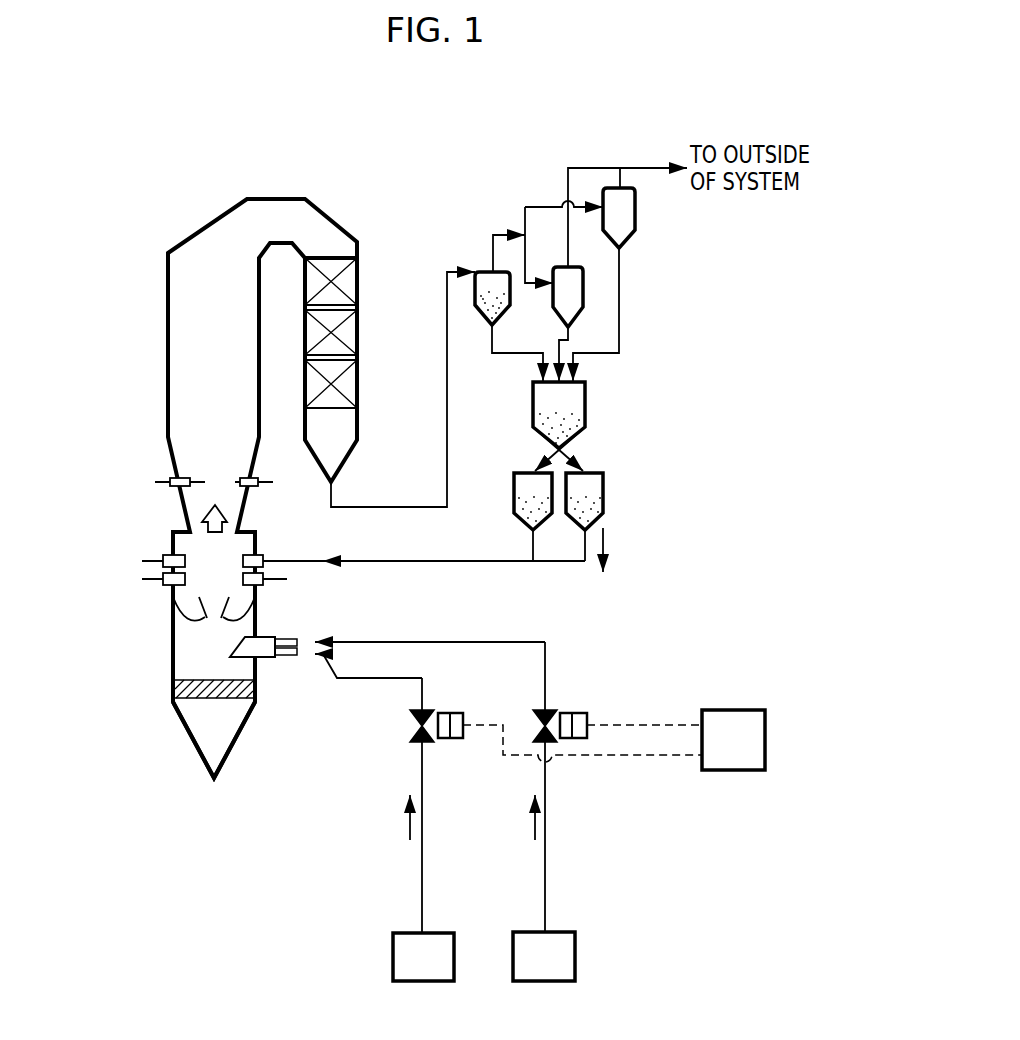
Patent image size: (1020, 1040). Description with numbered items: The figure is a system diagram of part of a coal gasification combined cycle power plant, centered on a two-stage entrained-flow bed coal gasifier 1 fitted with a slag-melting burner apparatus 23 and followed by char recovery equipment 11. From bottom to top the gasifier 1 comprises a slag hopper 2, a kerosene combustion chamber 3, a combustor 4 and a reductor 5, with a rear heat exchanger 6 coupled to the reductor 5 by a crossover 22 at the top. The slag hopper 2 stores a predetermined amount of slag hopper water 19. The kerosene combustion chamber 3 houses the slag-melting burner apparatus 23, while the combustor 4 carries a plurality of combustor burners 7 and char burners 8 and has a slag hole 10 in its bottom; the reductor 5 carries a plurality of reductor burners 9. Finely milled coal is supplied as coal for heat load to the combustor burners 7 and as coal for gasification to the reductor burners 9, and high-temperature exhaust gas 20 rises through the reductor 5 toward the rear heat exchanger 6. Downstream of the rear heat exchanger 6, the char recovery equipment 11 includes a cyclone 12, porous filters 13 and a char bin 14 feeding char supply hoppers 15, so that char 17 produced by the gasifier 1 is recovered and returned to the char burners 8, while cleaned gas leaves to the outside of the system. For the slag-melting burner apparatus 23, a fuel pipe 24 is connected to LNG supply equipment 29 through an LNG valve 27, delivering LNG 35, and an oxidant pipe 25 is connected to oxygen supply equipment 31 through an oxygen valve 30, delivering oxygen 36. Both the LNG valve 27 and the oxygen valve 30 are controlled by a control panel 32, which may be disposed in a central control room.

The two-stage entrained-flow bed coal gasifier 1 is at (168, 153).
The slag hopper 2 is at (128, 684).
The kerosene combustion chamber 3 is at (126, 598).
The combustor 4 is at (126, 533).
The reductor 5 is at (126, 200).
The rear heat exchanger 6 is at (372, 243).
The combustor burner 7 is at (287, 600).
The char burner 8 is at (262, 555).
The reductor burner 9 is at (245, 477).
The slag hole 10 is at (213, 605).
The char recovery equipment 11 is at (722, 193).
The cyclone 12 is at (483, 318).
The porous filter 13 is at (637, 212).
The char bin 14 is at (588, 410).
The char supply hopper 15 is at (606, 484).
The char 17 is at (606, 541).
The slag hopper water 19 is at (220, 750).
The high-temperature exhaust gas 20 is at (215, 503).
The crossover 22 is at (275, 197).
The slag-melting burner apparatus 23 is at (263, 658).
The fuel pipe 24 is at (300, 637).
The oxidant pipe 25 is at (298, 659).
The LNG valve 27 is at (540, 710).
The LNG supply equipment 29 is at (575, 955).
The oxygen valve 30 is at (410, 738).
The oxygen supply equipment 31 is at (393, 956).
The control panel 32 is at (738, 773).
The LNG 35 is at (535, 831).
The oxygen 36 is at (410, 828).